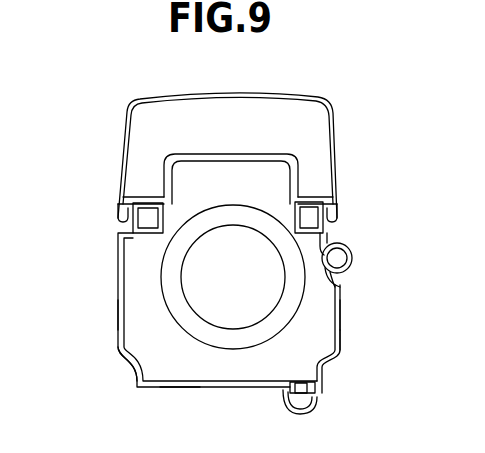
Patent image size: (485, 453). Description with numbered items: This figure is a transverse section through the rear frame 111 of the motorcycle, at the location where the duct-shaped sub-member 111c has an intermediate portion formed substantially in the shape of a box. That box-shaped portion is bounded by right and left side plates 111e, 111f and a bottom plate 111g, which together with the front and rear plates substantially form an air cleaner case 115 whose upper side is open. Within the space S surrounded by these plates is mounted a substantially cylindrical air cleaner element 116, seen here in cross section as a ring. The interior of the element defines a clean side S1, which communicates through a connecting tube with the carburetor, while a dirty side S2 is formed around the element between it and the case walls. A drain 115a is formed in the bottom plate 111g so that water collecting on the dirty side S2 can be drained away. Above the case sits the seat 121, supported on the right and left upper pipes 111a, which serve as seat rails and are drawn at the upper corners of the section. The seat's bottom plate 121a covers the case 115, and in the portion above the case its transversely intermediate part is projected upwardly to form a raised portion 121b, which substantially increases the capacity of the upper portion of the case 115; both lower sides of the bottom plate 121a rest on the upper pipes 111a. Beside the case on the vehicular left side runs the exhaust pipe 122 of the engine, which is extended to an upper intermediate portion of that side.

The seat 121 is at (308, 98).
The bottom plate of the seat 121a is at (314, 190).
The raised portion 121b is at (272, 152).
The rear frame 111 is at (210, 390).
The upper pipes 111a is at (166, 213).
The sub-member 111c is at (342, 308).
The right side plate 111e is at (340, 335).
The left side plate 111f is at (118, 306).
The bottom plate 111g is at (167, 388).
The air cleaner case 115 is at (119, 348).
The drain 115a is at (317, 393).
The air cleaner element 116 is at (245, 215).
The exhaust pipe 122 is at (352, 252).
The clean side S1 is at (245, 273).
The dirty side S2 is at (172, 357).
The space S is at (257, 364).